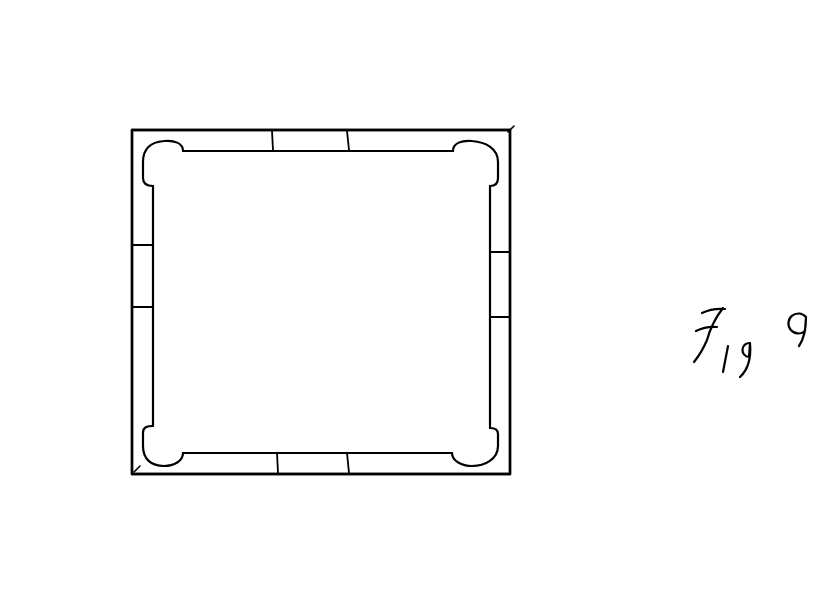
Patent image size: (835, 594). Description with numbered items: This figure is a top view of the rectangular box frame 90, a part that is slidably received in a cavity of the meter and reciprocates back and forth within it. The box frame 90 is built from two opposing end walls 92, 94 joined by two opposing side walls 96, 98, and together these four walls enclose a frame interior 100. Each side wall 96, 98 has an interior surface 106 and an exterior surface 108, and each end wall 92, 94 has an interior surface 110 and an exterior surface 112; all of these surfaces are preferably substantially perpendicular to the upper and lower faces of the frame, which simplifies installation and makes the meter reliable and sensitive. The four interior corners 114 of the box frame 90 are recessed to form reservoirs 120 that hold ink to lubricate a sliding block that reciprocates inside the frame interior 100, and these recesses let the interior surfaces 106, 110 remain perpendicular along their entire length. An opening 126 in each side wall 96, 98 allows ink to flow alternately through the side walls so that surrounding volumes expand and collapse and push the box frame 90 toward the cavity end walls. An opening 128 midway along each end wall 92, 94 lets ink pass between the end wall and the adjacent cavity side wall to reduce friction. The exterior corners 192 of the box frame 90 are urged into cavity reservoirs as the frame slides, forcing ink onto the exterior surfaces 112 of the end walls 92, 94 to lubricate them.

The box frame 90 is at (610, 104).
The end wall 92 is at (407, 137).
The end wall 94 is at (398, 465).
The side wall 96 is at (495, 378).
The side wall 98 is at (135, 357).
The frame interior 100 is at (378, 313).
The interior surface 106 is at (488, 220).
The exterior surface 108 is at (513, 228).
The interior surface 110 is at (232, 150).
The exterior surface 112 is at (244, 130).
The interior corner 114 is at (498, 147).
The reservoir 120 is at (160, 155).
The opening 126 is at (130, 273).
The opening 128 is at (328, 130).
The exterior corner 192 is at (132, 130).